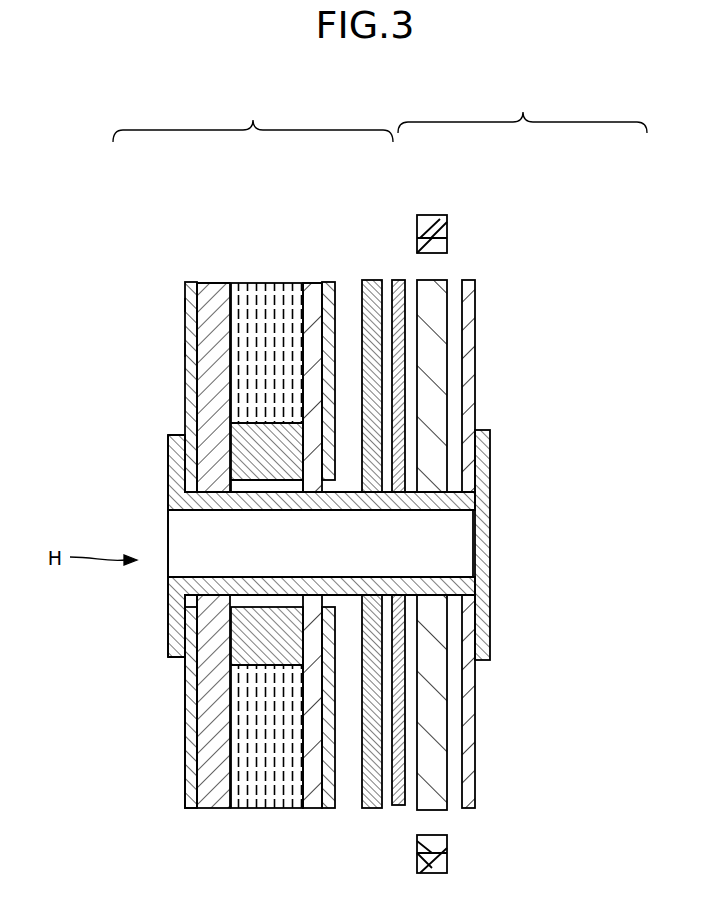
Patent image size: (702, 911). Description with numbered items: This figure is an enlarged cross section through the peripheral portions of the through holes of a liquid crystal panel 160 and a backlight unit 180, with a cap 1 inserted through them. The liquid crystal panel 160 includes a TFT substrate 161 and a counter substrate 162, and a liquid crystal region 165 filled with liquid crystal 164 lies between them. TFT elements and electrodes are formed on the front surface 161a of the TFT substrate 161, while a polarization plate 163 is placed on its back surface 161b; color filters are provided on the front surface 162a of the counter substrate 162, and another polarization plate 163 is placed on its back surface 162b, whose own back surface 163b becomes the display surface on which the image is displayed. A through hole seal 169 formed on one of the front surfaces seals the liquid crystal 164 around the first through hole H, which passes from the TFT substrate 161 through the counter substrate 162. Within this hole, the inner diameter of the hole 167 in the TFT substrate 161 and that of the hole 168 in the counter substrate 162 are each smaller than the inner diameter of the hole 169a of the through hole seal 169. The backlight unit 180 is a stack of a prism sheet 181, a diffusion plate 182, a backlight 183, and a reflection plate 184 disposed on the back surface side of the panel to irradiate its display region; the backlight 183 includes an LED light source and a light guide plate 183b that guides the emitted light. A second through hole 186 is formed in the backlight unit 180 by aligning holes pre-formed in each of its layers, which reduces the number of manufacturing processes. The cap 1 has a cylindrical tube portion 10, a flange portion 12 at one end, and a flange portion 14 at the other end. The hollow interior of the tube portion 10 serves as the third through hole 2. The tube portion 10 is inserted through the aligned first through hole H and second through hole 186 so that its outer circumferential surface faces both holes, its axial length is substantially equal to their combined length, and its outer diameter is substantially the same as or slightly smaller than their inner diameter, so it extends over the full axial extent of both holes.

The cap 1 is at (156, 456).
The third through hole 2 is at (177, 528).
The tube portion 10 is at (243, 590).
The flange portion 12 is at (172, 470).
The flange portion 14 is at (490, 477).
The liquid crystal panel 160 is at (253, 118).
The TFT substrate 161 is at (313, 287).
The front surface of TFT substrate 161a is at (305, 303).
The back surface of TFT substrate 161b is at (330, 310).
The counter substrate 162 is at (198, 283).
The front surface of counter substrate 162a is at (215, 283).
The back surface of counter substrate 162b is at (185, 305).
The polarization plate 163 is at (190, 283).
The back surface of polarization plate 163b is at (185, 350).
The liquid crystal 164 is at (255, 293).
The liquid crystal region 165 is at (243, 298).
The hole 167 is at (313, 588).
The hole 168 is at (270, 583).
The through hole seal 169 is at (267, 470).
The hole of through hole seal 169a is at (233, 484).
The backlight unit 180 is at (522, 110).
The prism sheet 181 is at (374, 283).
The diffusion plate 182 is at (400, 283).
The backlight 183 is at (437, 222).
The light guide plate 183b is at (442, 280).
The reflection plate 184 is at (467, 290).
The second through hole 186 is at (412, 495).